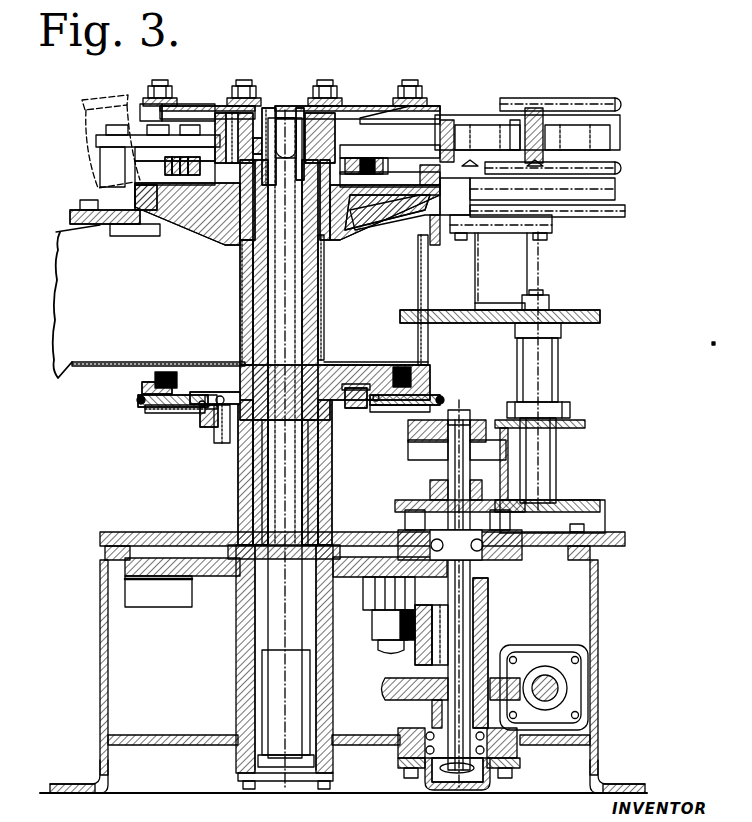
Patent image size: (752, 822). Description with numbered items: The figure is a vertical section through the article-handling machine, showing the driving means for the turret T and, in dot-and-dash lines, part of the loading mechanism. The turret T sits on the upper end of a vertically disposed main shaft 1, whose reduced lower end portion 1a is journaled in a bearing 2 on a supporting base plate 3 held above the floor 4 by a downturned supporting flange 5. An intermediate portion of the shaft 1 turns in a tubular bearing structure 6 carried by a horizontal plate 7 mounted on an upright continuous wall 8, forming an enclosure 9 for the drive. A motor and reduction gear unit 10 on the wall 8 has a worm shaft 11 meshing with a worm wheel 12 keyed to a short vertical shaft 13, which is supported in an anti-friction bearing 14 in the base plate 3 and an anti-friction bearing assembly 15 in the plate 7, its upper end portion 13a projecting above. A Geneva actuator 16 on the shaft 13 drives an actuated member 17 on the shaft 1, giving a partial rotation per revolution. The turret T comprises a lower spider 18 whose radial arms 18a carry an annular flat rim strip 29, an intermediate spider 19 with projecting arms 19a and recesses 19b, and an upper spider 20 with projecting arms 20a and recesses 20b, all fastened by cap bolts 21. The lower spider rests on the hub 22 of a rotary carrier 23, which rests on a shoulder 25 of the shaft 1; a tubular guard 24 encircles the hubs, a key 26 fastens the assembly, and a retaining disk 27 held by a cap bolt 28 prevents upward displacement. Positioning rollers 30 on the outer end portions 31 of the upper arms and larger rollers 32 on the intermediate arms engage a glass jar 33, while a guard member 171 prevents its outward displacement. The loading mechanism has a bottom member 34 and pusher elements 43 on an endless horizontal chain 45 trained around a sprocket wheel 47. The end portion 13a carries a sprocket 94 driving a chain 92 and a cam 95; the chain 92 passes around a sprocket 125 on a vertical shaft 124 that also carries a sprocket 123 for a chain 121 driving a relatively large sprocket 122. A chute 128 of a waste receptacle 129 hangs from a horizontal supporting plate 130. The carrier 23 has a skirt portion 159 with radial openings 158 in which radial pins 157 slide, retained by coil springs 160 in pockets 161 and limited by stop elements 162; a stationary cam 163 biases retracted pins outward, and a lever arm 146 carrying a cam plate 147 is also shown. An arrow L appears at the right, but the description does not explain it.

The main shaft 1 is at (285, 450).
The reduced lower end portion 1a is at (286, 708).
The bearing 2 is at (240, 692).
The supporting base plate 3 is at (145, 738).
The floor 4 is at (188, 794).
The downturned supporting flange 5 is at (100, 762).
The tubular bearing structure 6 is at (238, 496).
The horizontal plate 7 is at (150, 533).
The upright continuous wall 8 is at (100, 655).
The enclosure 9 is at (132, 655).
The motor and reduction gear unit 10 is at (526, 652).
The worm shaft 11 is at (547, 676).
The worm wheel 12 is at (385, 690).
The short vertical shaft 13 is at (490, 596).
The upper end portion 13a is at (448, 458).
The anti-friction bearing 14 is at (412, 733).
The anti-friction bearing assembly 15 is at (488, 560).
The actuator 16 is at (360, 598).
The actuated member 17 is at (222, 582).
The lower spider 18 is at (322, 208).
The radial arms 18a is at (212, 238).
The intermediate spider 19 is at (288, 156).
The projecting arms 19a is at (422, 160).
The re-entrant portions or recesses 19b is at (390, 150).
The upper spider 20 is at (306, 113).
The radially projecting arms 20a is at (200, 106).
The re-entrant portions or recesses 20b is at (212, 106).
The cap bolts 21 is at (258, 100).
The hub 22 is at (318, 302).
The rotary carrier 23 is at (338, 410).
The tubular guard 24 is at (240, 300).
The upwardly facing shoulder 25 is at (280, 418).
The key 26 is at (308, 272).
The retaining disk 27 is at (298, 108).
The cap bolt 28 is at (270, 108).
The annular flat rim strip 29 is at (420, 196).
The article positioning rollers 30 is at (250, 88).
The outer end portions 31 is at (140, 105).
The further positioning rollers 32 is at (222, 176).
The glass jar 33 is at (84, 120).
The bottom member 34 is at (625, 192).
The pusher elements 43 is at (495, 120).
The endless horizontal chain 45 is at (625, 118).
The sprocket wheel 47 is at (515, 120).
The chain 92 is at (500, 430).
The sprocket 94 is at (420, 440).
The cam 95 is at (396, 504).
The chain 121 is at (415, 310).
The relatively large sprocket 122 is at (475, 305).
The sprocket 123 is at (560, 330).
The vertical shaft 124 is at (548, 294).
The sprocket 125 is at (570, 405).
The chute 128 is at (52, 363).
The waste receptacle 129 is at (88, 366).
The horizontal supporting plate 130 is at (118, 226).
The second lever arm 146 is at (220, 443).
The cam plate 147 is at (200, 430).
The radial pins 157 is at (190, 413).
The radial openings 158 is at (412, 390).
The depending flange or skirt portion 159 is at (140, 407).
The compressed coil springs 160 is at (155, 378).
The pockets 161 is at (142, 388).
The stop elements 162 is at (137, 400).
The stationary cam 163 is at (356, 410).
The guard member 171 is at (96, 142).
The turret T is at (372, 92).
The direction L is at (616, 155).